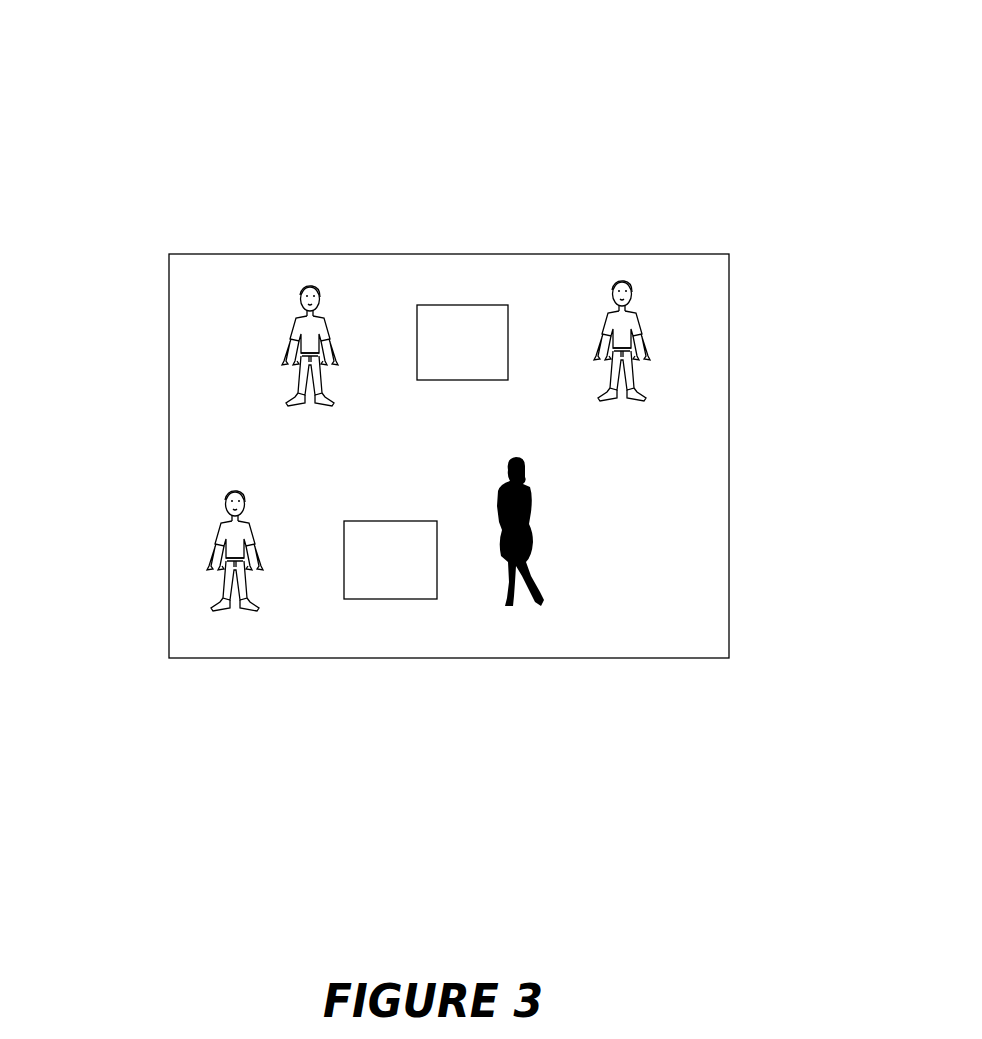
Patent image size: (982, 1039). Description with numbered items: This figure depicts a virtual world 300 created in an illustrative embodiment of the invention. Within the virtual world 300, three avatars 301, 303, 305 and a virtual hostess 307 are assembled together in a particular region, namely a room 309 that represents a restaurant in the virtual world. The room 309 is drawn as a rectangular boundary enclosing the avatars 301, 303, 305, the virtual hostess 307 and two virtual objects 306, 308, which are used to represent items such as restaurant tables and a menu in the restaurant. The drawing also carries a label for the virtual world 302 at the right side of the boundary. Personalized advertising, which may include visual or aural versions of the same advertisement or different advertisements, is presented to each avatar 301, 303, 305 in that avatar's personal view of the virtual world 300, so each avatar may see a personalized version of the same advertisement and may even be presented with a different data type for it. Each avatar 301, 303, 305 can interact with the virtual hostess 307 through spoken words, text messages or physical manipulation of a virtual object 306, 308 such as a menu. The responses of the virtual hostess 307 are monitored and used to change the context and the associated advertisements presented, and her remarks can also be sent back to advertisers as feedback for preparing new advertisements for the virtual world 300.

The virtual world 300 is at (371, 63).
The avatar 301 is at (225, 582).
The virtual world 302 is at (723, 492).
The avatar 303 is at (305, 322).
The avatar 305 is at (637, 310).
The virtual object 306 is at (413, 593).
The virtual hostess 307 is at (553, 593).
The virtual object 308 is at (468, 310).
The room 309 is at (218, 415).